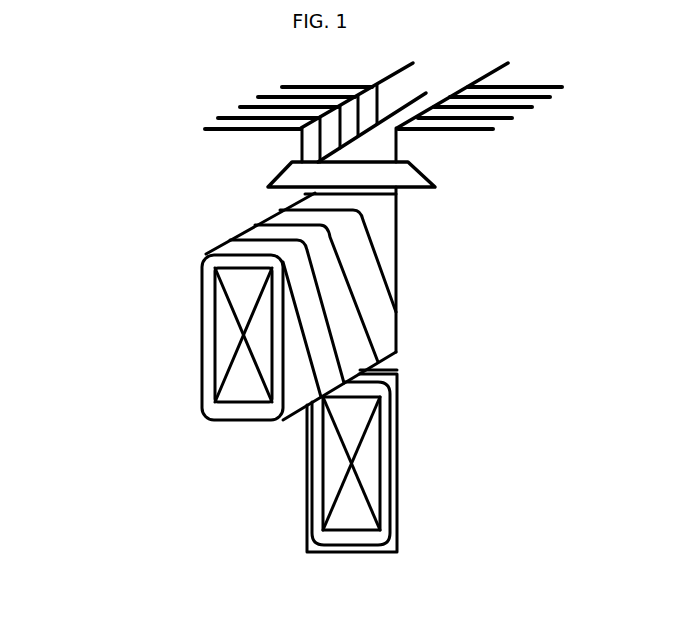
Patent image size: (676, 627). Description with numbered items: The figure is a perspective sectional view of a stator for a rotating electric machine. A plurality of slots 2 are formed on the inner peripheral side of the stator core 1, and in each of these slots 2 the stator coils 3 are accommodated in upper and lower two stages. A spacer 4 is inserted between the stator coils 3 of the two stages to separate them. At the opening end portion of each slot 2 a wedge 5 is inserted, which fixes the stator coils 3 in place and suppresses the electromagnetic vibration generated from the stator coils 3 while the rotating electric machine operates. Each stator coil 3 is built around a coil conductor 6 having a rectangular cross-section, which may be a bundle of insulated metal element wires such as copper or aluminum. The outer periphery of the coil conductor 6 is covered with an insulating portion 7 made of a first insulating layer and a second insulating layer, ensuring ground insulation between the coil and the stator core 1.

The stator core 1 is at (248, 150).
The slot 2 is at (397, 546).
The stator coil 3 is at (319, 356).
The spacer 4 is at (398, 366).
The wedge 5 is at (402, 173).
The coil conductor 6 is at (225, 328).
The insulating portion 7 is at (330, 320).